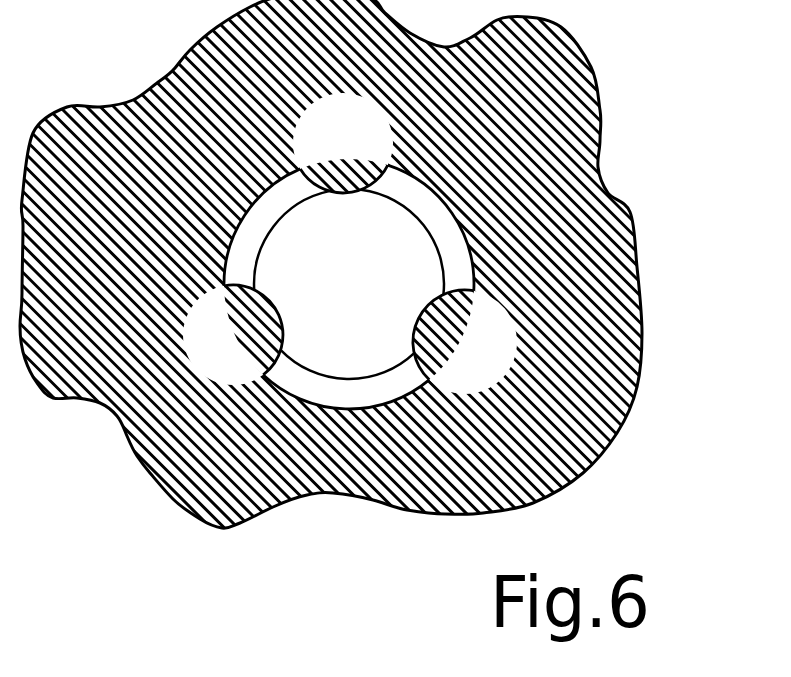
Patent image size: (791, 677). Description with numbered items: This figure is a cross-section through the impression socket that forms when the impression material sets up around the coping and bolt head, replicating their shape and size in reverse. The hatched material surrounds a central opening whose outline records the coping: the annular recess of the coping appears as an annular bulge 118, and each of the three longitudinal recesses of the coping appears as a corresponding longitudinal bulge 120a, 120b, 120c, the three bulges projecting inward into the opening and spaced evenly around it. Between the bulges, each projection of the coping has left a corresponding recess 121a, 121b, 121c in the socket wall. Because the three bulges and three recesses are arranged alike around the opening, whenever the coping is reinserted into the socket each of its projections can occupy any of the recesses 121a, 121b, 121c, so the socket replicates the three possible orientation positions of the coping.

The annular bulge 118 is at (290, 262).
The longitudinal bulge 120a is at (357, 193).
The longitudinal bulge 120b is at (303, 315).
The longitudinal bulge 120c is at (407, 340).
The recess 121a is at (258, 207).
The recess 121b is at (353, 391).
The recess 121c is at (438, 227).